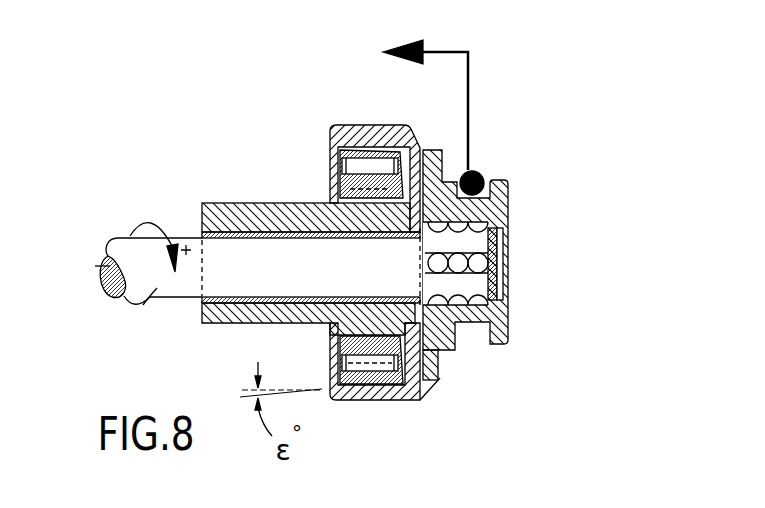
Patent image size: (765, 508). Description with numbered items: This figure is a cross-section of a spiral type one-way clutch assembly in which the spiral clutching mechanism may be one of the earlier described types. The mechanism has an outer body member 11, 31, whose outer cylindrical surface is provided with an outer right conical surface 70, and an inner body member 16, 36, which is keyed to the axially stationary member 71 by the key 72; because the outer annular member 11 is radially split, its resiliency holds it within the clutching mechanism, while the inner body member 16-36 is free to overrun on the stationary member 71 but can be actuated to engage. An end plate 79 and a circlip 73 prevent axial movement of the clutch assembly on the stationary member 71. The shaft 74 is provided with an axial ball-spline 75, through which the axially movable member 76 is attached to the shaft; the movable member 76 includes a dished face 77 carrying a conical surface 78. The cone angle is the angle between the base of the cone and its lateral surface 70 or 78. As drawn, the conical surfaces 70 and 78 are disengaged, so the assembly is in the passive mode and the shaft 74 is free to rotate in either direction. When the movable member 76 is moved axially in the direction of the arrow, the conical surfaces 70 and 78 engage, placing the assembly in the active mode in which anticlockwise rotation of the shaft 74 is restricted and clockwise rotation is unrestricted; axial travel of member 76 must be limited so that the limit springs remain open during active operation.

The outer annular member 11 is at (293, 137).
The outer body member 31 is at (293, 137).
The inner body member 16 is at (293, 137).
The inner body member 36 is at (293, 137).
The outer right conical surface 70 is at (366, 152).
The stationary member 71 is at (265, 318).
The key 72 is at (408, 185).
The circlip 73 is at (452, 350).
The shaft 74 is at (182, 287).
The axial ball-spline 75 is at (480, 264).
The axially movable member 76 is at (488, 190).
The dished face 77 is at (330, 394).
The conical surface 78 is at (378, 384).
The end plate 79 is at (447, 377).